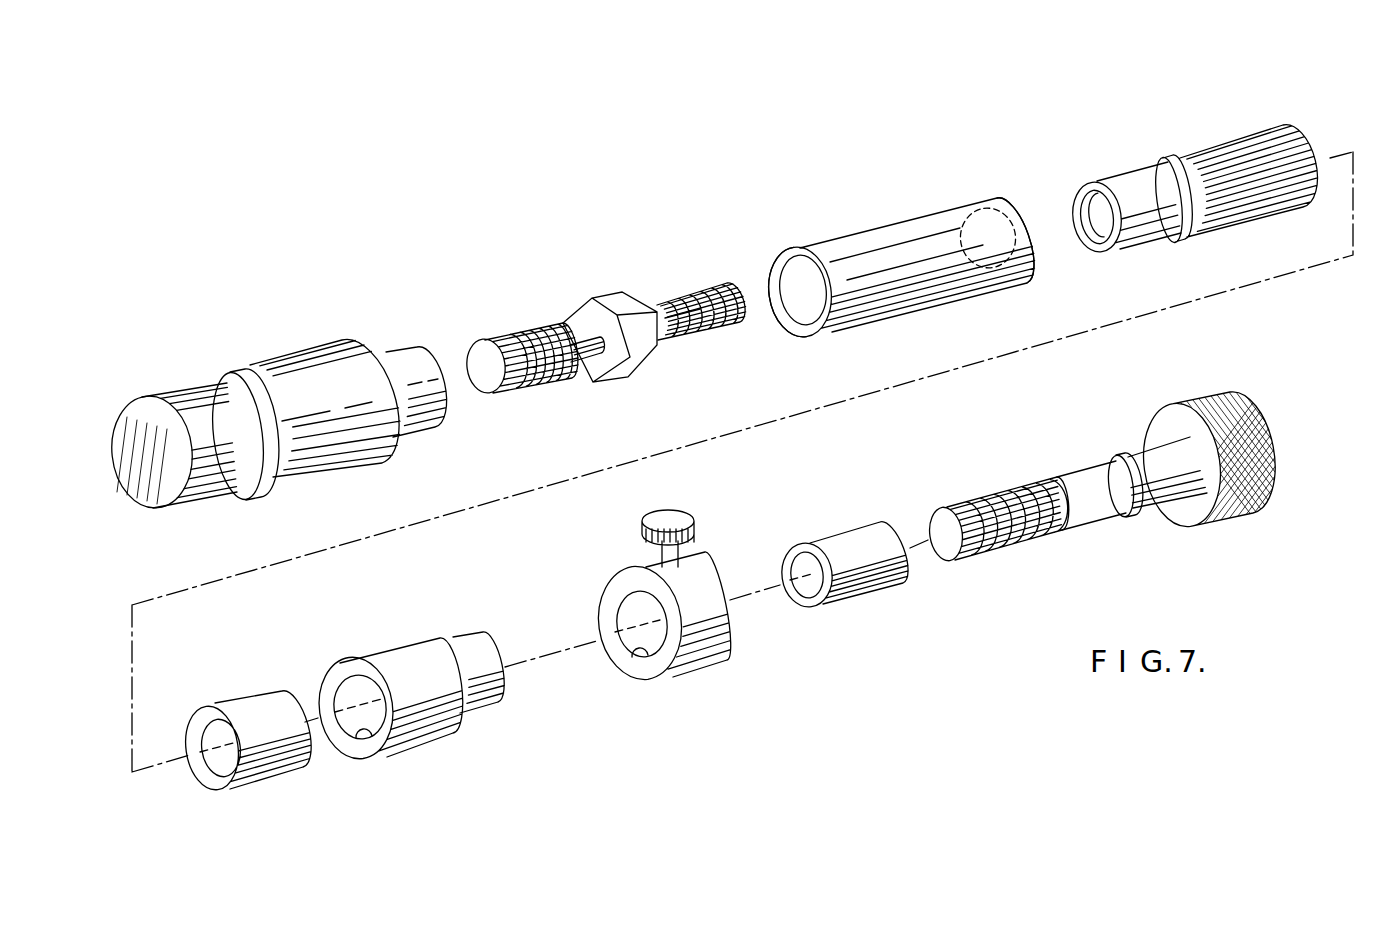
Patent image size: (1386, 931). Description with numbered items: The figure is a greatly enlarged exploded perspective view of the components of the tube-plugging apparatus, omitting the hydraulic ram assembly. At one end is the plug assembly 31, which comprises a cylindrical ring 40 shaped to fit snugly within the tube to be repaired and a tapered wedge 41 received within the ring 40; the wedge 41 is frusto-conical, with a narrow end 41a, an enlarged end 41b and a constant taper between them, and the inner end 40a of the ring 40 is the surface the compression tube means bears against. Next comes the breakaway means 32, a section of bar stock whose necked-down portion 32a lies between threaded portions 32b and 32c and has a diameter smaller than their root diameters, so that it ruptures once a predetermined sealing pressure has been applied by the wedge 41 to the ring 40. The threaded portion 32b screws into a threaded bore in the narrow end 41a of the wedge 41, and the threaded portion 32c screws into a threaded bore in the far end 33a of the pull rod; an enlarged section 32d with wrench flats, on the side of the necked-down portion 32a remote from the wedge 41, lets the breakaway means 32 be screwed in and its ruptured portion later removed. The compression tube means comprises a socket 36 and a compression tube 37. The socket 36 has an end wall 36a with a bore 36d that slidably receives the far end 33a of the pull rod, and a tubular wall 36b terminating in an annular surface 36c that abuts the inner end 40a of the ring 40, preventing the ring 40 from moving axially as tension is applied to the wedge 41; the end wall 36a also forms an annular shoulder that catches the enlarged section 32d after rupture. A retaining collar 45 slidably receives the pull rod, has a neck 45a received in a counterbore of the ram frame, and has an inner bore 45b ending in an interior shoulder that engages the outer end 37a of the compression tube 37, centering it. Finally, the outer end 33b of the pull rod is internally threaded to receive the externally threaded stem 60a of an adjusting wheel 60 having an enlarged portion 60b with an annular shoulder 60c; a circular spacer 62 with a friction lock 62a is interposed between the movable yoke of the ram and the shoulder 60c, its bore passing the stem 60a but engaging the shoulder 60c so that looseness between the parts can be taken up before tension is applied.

The enlarged end 41b is at (122, 435).
The tapered wedge 41 is at (193, 407).
The plug assembly 31 is at (275, 377).
The ring 40 is at (358, 358).
The inner end 40a is at (393, 448).
The narrow end 41a is at (417, 363).
The threaded portion 32b is at (522, 383).
The enlarged section with wrench flats 32d is at (587, 317).
The necked-down portion 32a is at (585, 360).
The threaded portion 32c is at (702, 340).
The breakaway means 32 is at (647, 325).
The socket 36 is at (888, 245).
The tubular wall 36b is at (840, 260).
The end wall 36a is at (1012, 205).
The annular surface 36c is at (803, 330).
The bore 36d is at (1015, 287).
The far end of pull rod 33a is at (1118, 180).
The compression tube 37 is at (1233, 147).
The outer end of compression tube 37a is at (273, 713).
The retaining collar 45 is at (400, 665).
The neck 45a is at (465, 648).
The inner bore 45b is at (362, 735).
The spacer 62 is at (708, 585).
The friction lock 62a is at (632, 657).
The outer end of pull rod 33b is at (862, 540).
The threaded stem 60a is at (995, 545).
The annular shoulder 60c is at (1110, 457).
The enlarged portion 60b is at (1167, 510).
The adjusting wheel 60 is at (1180, 418).